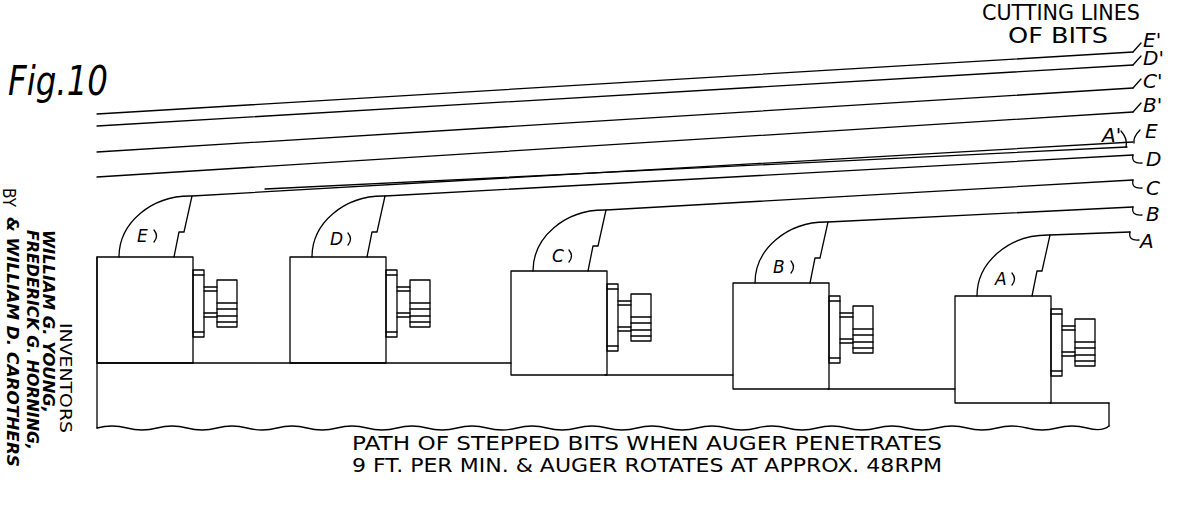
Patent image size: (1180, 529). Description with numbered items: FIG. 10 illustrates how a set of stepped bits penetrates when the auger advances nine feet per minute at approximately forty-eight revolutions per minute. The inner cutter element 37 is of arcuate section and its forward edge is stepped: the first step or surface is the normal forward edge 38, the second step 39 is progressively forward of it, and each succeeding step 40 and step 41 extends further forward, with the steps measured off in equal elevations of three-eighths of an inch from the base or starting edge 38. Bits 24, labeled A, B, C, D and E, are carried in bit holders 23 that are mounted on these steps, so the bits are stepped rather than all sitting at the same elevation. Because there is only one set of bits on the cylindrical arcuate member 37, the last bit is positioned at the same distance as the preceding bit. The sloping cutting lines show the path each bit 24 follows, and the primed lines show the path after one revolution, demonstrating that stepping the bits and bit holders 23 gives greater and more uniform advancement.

The bit holder 23 is at (153, 308).
The bit 24 is at (1002, 257).
The inner cutter element 37 is at (1066, 417).
The normal forward edge 38 is at (1073, 403).
The second step 39 is at (884, 389).
The third step 40 is at (660, 375).
The fourth step 41 is at (433, 363).